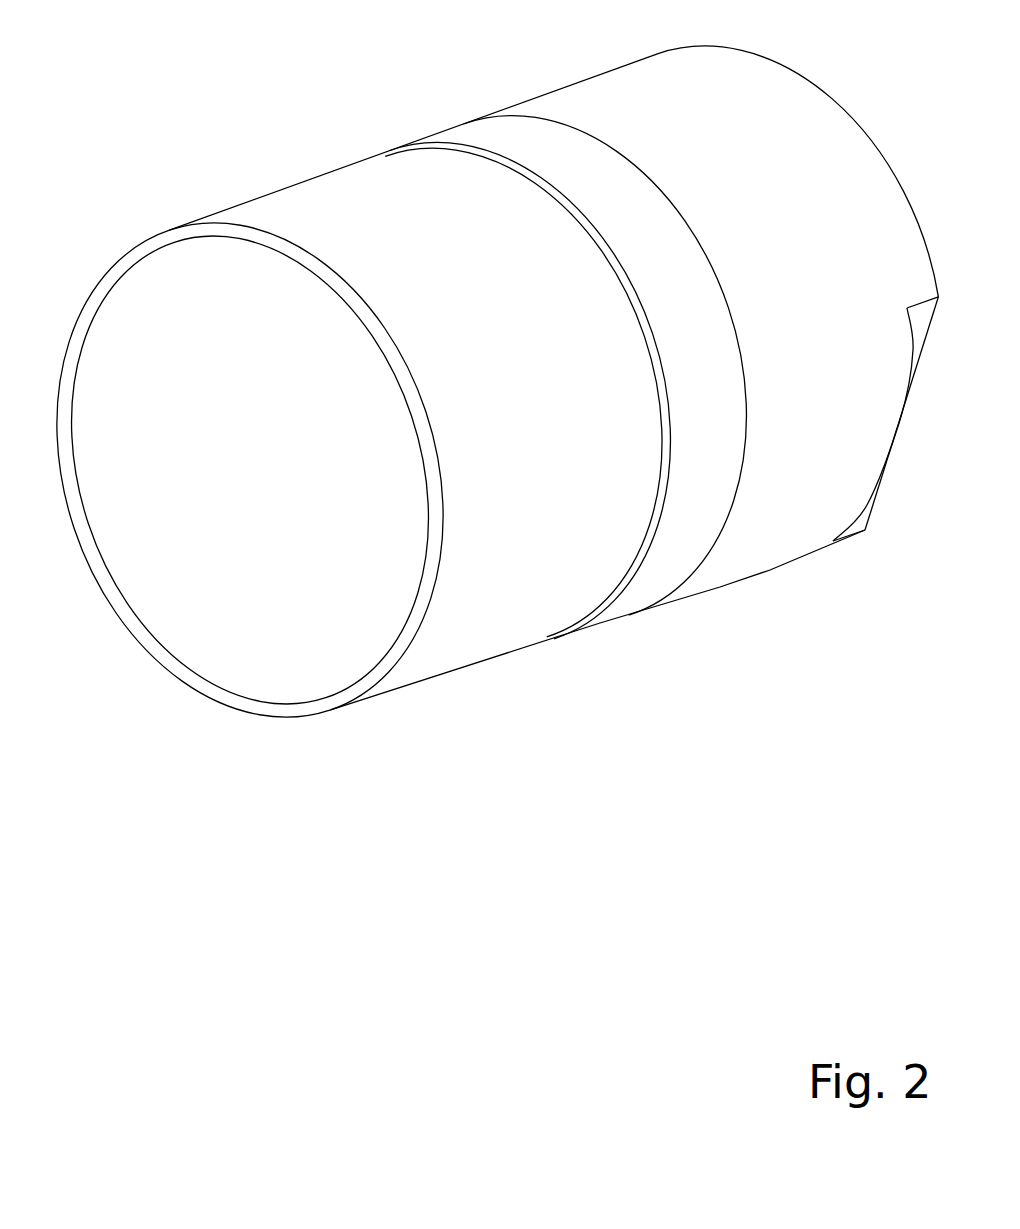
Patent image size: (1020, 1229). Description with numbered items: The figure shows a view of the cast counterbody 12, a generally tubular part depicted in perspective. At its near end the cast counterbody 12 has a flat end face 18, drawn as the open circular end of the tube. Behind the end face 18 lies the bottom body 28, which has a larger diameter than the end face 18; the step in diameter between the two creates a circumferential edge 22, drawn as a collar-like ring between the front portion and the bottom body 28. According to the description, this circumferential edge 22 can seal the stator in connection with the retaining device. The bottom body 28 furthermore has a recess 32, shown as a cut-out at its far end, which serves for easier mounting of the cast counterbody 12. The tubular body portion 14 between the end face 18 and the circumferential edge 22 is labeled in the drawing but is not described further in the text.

The cast counterbody 12 is at (430, 70).
The tubular body 14 is at (581, 428).
The flat end face 18 is at (308, 708).
The circumferential edge 22 is at (637, 565).
The bottom body 28 is at (779, 158).
The recess 32 is at (863, 528).